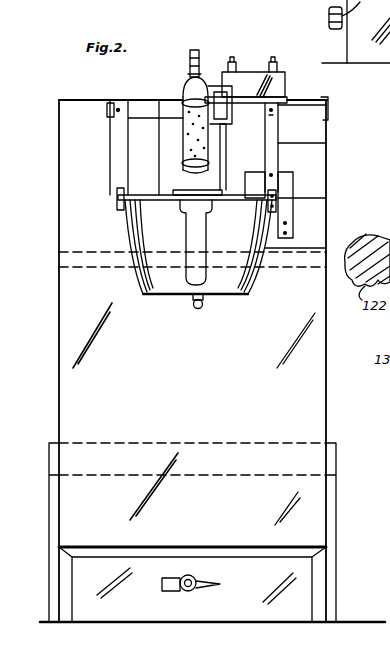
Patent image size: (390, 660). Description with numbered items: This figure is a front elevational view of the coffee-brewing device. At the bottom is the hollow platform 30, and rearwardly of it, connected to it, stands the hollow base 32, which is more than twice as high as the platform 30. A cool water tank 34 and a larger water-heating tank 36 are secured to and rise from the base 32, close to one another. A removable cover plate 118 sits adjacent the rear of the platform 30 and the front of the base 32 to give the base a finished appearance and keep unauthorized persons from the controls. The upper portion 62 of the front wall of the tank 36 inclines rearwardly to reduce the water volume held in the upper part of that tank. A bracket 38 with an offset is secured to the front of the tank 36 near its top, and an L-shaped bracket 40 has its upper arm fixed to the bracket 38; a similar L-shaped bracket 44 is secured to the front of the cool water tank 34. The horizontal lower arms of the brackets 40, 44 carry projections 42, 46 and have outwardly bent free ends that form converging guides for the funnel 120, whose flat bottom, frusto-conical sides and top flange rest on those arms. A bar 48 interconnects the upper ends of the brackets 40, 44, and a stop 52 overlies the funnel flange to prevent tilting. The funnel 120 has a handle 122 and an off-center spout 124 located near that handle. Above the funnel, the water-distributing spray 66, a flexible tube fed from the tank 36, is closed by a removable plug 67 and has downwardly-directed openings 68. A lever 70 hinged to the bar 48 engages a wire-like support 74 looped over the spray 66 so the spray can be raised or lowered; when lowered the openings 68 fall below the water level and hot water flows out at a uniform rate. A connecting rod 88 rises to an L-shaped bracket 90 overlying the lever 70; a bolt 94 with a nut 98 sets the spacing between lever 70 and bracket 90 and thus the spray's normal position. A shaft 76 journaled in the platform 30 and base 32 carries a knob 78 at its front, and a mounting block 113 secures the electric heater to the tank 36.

The platform 30 is at (303, 588).
The base 32 is at (330, 492).
The cool water tank 34 is at (59, 158).
The water-heating tank 36 is at (313, 222).
The bracket 38 is at (290, 195).
The L-shaped bracket 40 is at (326, 143).
The projection 42 is at (280, 188).
The L-shaped bracket 44 is at (116, 200).
The projection 46 is at (123, 193).
The bar 48 is at (143, 107).
The stop 52 is at (215, 188).
The upper portion of the front wall of the tank 62 is at (310, 120).
The water-distributing spray 66 is at (182, 105).
The removable plug 67 is at (187, 80).
The openings 68 is at (184, 134).
The lever 70 is at (226, 125).
The wire-like support 74 is at (188, 203).
The shaft 76 is at (192, 575).
The knob 78 is at (190, 591).
The connecting rod 88 is at (228, 140).
The L-shaped bracket 90 is at (212, 85).
The bolt 94 is at (197, 54).
The nut 98 is at (190, 68).
The mounting block 113 is at (255, 73).
The removable cover plate 118 is at (305, 418).
The funnel 120 is at (246, 282).
The handle 122 is at (192, 275).
The spout 124 is at (198, 309).